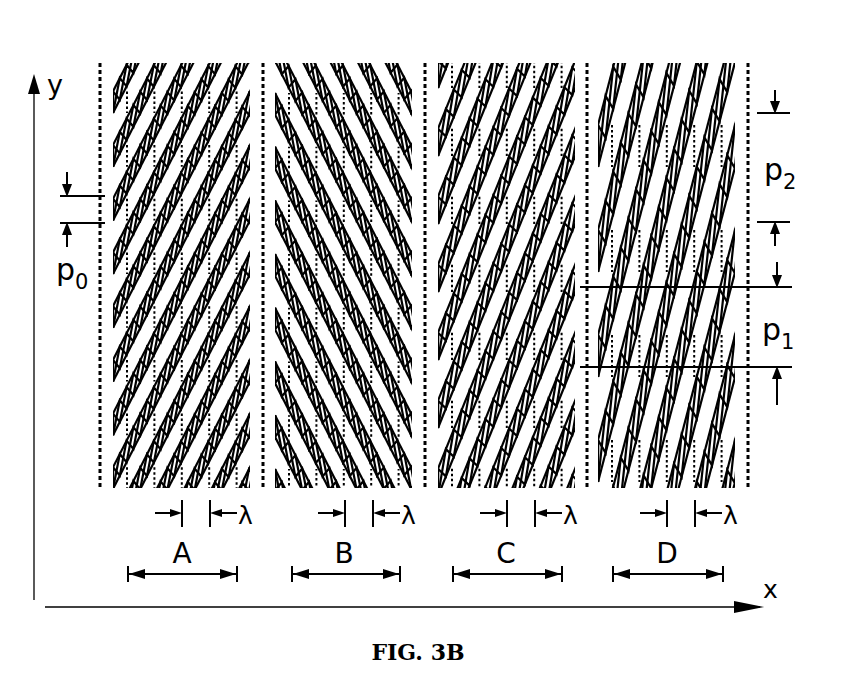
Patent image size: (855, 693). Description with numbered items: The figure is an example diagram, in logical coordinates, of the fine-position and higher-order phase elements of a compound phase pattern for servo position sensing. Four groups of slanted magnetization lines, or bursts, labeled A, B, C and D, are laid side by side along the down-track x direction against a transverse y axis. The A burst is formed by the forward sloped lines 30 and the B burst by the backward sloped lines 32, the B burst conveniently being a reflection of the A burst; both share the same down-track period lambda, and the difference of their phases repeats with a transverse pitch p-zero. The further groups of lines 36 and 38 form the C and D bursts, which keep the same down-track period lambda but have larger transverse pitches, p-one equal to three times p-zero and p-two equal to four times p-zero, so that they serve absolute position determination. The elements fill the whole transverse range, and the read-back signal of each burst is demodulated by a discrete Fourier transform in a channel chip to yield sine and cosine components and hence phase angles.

The forward sloped lines 30 is at (188, 346).
The backward sloped lines 32 is at (350, 346).
The third grating region (section C) 36 is at (513, 346).
The fourth grating region (section D) 38 is at (674, 346).